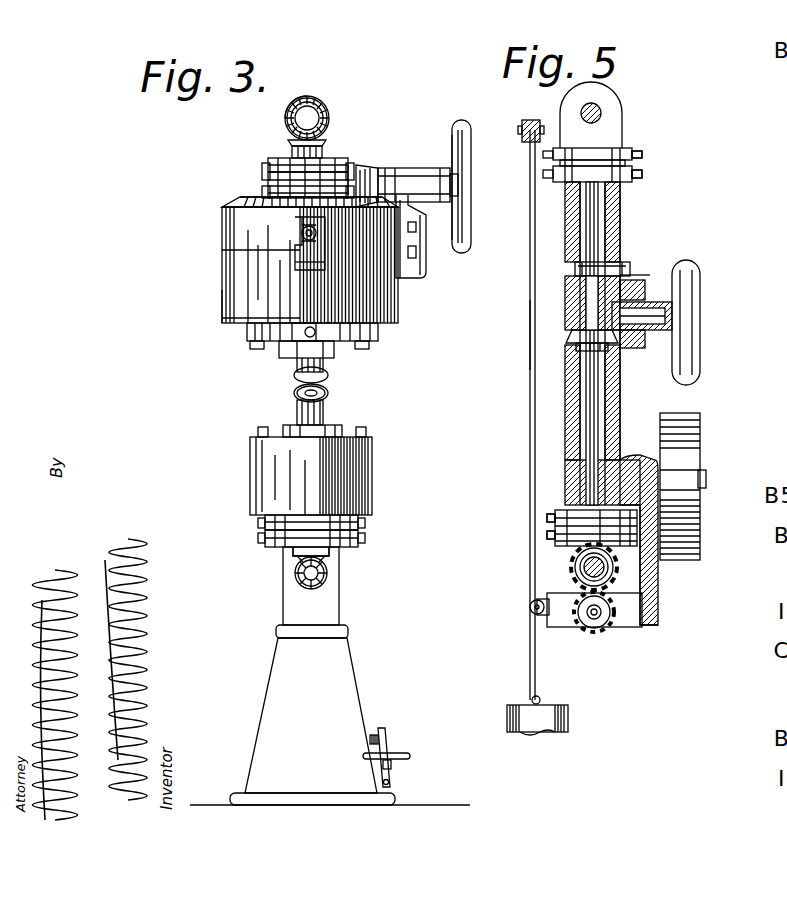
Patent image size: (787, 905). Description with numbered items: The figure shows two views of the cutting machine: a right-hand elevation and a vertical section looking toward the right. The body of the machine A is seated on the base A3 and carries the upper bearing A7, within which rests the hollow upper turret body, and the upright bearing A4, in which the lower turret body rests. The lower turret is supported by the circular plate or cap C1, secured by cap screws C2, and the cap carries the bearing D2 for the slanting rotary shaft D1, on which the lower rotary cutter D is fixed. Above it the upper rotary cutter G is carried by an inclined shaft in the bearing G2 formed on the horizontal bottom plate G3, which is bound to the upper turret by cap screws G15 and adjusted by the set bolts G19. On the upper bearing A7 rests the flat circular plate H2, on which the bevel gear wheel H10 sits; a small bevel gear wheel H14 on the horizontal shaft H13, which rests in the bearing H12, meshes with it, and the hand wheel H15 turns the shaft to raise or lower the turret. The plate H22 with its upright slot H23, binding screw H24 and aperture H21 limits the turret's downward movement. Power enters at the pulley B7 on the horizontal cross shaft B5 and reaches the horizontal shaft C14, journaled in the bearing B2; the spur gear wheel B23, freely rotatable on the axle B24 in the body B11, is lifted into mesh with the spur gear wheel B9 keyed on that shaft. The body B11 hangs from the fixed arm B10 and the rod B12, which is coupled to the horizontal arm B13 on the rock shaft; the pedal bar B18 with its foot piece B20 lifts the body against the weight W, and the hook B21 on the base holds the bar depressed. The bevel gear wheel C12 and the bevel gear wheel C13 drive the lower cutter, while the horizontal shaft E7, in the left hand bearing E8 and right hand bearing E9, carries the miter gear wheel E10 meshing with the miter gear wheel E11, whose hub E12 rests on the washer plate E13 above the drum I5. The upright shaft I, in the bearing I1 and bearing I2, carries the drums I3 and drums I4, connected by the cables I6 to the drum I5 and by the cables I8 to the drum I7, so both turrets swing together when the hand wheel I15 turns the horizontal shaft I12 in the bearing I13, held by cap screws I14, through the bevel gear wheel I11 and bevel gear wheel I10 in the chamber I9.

In FIG. 3, the horizontal shaft E7 is at (328, 104).
In FIG. 5, the horizontal shaft E7 is at (600, 112).
In FIG. 5, the left hand bearing E8 is at (594, 100).
In FIG. 3, the right hand bearing E9 is at (300, 97).
In FIG. 3, the miter gear wheel E10 is at (321, 103).
In FIG. 3, the miter gear wheel E11 is at (288, 127).
In FIG. 3, the hub E12 is at (322, 148).
In FIG. 3, the washer plate E13 is at (340, 168).
In FIG. 3, the flat circular plate H2 is at (232, 230).
In FIG. 3, the bevel gear wheel H10 is at (300, 204).
In FIG. 3, the bearing H12 is at (418, 180).
In FIG. 3, the horizontal shaft H13 is at (472, 152).
In FIG. 3, the small bevel gear wheel H14 is at (398, 168).
In FIG. 3, the hand wheel H15 is at (465, 120).
In FIG. 3, the aperture H21 is at (300, 262).
In FIG. 3, the plate H22 is at (250, 250).
In FIG. 3, the upright slot H23 is at (296, 232).
In FIG. 3, the binding screw H24 is at (262, 208).
In FIG. 3, the drum I5 is at (293, 194).
In FIG. 3, the metal strap or wire cable I6 is at (280, 176).
In FIG. 5, the metal strap or wire cable I6 is at (642, 174).
In FIG. 3, the drum I7 is at (270, 530).
In FIG. 3, the cables I8 is at (360, 529).
In FIG. 5, the cables I8 is at (555, 542).
In FIG. 5, the bearing I1 is at (612, 196).
In FIG. 5, the bearing I2 is at (567, 462).
In FIG. 5, the drums I3 is at (605, 155).
In FIG. 5, the drums I4 is at (580, 520).
In FIG. 5, the chamber I9 is at (585, 292).
In FIG. 5, the bevel gear wheel I10 is at (588, 334).
In FIG. 5, the bevel gear wheel I11 is at (648, 268).
In FIG. 5, the horizontal shaft I12 is at (690, 296).
In FIG. 5, the bearing I13 is at (696, 354).
In FIG. 5, the cap screws I14 is at (655, 252).
In FIG. 5, the hand wheel I15 is at (700, 318).
In FIG. 5, the upright shaft I is at (590, 400).
In FIG. 3, the body of the machine A is at (300, 612).
In FIG. 5, the body of the machine A is at (617, 244).
In FIG. 3, the base A3 is at (275, 705).
In FIG. 3, the upright bearing A4 is at (300, 470).
In FIG. 3, the upper bearing A7 is at (270, 290).
In FIG. 3, the upper rotary cutter G is at (328, 375).
In FIG. 3, the bearing G2 is at (325, 366).
In FIG. 3, the horizontal bottom plate G3 is at (300, 336).
In FIG. 3, the cap screws G15 is at (258, 346).
In FIG. 3, the set bolts G19 is at (285, 318).
In FIG. 3, the lower rotary cutter D is at (294, 378).
In FIG. 3, the slanting rotary shaft D1 is at (295, 392).
In FIG. 3, the bearing D2 is at (326, 396).
In FIG. 3, the circular plate or cap C1 is at (283, 430).
In FIG. 3, the cap screws C2 is at (260, 427).
In FIG. 3, the bevel gear wheel C12 is at (297, 565).
In FIG. 3, the bevel gear wheel C13 is at (300, 583).
In FIG. 3, the horizontal shaft C14 is at (328, 573).
In FIG. 5, the horizontal shaft C14 is at (584, 566).
In FIG. 5, the bearing B2 is at (772, 625).
In FIG. 5, the horizontal cross shaft B5 is at (704, 478).
In FIG. 5, the pulley B7 is at (700, 418).
In FIG. 5, the spur gear wheel B9 is at (575, 575).
In FIG. 5, the fixed arm B10 is at (650, 587).
In FIG. 5, the body B11 is at (632, 612).
In FIG. 5, the rod B12 is at (530, 336).
In FIG. 5, the horizontal arm B13 is at (530, 170).
In FIG. 3, the pedal bar B18 is at (392, 766).
In FIG. 3, the foot piece B20 is at (406, 755).
In FIG. 3, the hook B21 is at (384, 740).
In FIG. 5, the spur gear wheel B23 is at (606, 630).
In FIG. 5, the axle B24 is at (610, 632).
In FIG. 5, the weight W is at (535, 740).